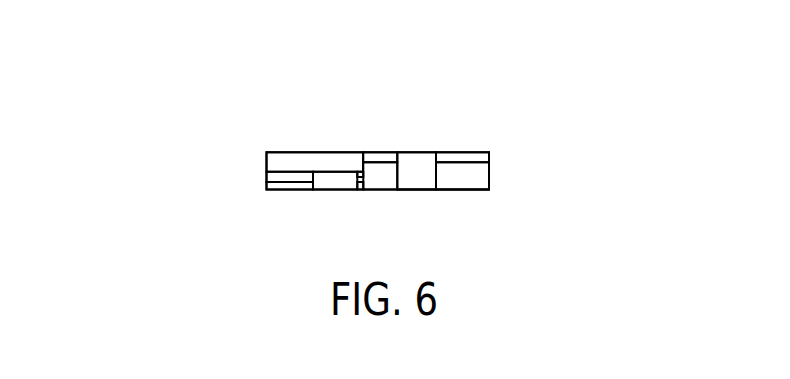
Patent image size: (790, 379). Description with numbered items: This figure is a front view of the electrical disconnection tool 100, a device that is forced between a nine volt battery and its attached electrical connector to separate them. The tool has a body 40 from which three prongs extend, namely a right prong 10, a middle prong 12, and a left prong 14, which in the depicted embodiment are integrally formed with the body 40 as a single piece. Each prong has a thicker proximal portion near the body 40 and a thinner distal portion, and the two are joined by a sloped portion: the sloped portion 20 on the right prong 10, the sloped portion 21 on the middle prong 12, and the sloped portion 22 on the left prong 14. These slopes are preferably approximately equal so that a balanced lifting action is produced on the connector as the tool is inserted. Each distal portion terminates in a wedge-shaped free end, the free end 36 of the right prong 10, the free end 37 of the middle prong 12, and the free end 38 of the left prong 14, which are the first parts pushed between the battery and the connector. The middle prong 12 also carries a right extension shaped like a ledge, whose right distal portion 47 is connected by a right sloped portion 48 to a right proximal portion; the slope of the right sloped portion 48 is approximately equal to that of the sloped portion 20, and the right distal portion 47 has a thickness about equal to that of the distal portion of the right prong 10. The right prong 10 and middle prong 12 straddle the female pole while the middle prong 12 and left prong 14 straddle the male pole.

The electrical disconnection tool 100 is at (230, 74).
The body 40 is at (307, 152).
The sloped portion 20 is at (272, 177).
The free end 36 is at (271, 187).
The right prong 10 is at (302, 191).
The right sloped portion 48 is at (358, 170).
The right distal portion 47 is at (361, 191).
The sloped portion 21 is at (382, 153).
The middle prong 12 is at (370, 191).
The free end 37 is at (387, 173).
The sloped portion 22 is at (457, 153).
The free end 38 is at (475, 177).
The left prong 14 is at (467, 191).